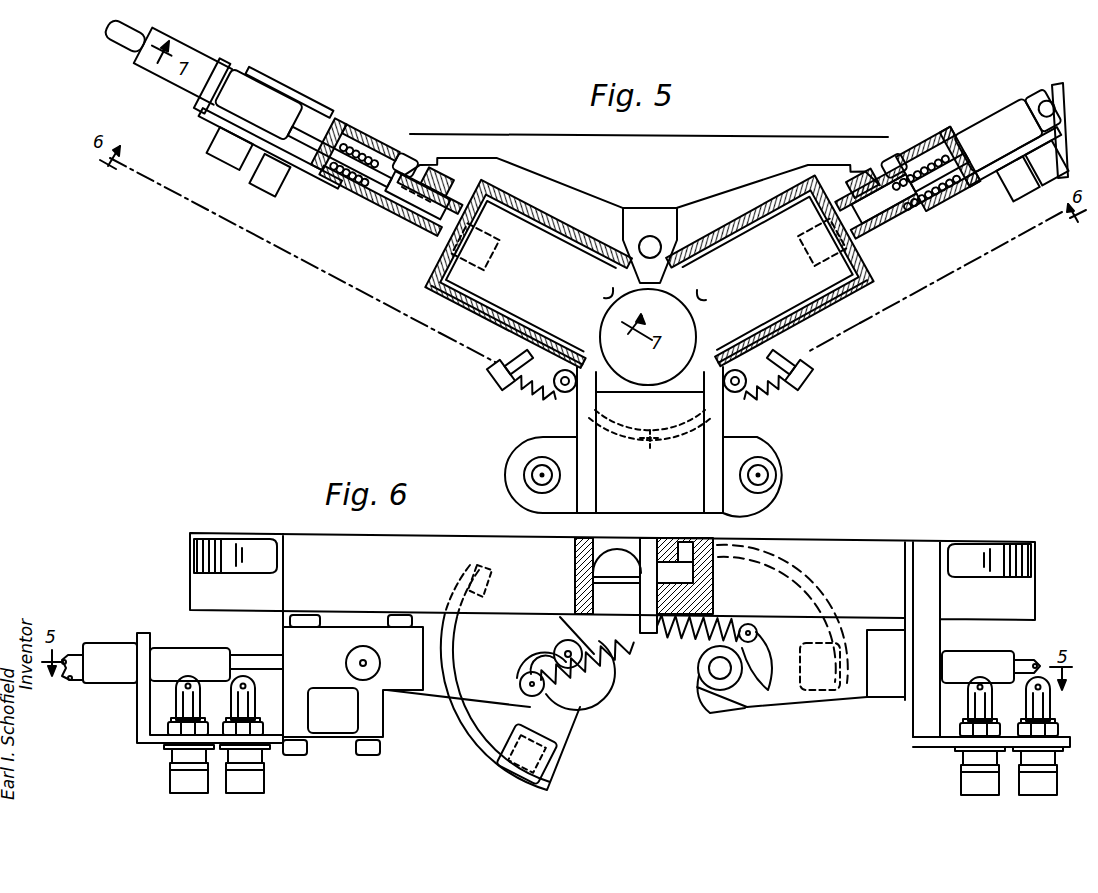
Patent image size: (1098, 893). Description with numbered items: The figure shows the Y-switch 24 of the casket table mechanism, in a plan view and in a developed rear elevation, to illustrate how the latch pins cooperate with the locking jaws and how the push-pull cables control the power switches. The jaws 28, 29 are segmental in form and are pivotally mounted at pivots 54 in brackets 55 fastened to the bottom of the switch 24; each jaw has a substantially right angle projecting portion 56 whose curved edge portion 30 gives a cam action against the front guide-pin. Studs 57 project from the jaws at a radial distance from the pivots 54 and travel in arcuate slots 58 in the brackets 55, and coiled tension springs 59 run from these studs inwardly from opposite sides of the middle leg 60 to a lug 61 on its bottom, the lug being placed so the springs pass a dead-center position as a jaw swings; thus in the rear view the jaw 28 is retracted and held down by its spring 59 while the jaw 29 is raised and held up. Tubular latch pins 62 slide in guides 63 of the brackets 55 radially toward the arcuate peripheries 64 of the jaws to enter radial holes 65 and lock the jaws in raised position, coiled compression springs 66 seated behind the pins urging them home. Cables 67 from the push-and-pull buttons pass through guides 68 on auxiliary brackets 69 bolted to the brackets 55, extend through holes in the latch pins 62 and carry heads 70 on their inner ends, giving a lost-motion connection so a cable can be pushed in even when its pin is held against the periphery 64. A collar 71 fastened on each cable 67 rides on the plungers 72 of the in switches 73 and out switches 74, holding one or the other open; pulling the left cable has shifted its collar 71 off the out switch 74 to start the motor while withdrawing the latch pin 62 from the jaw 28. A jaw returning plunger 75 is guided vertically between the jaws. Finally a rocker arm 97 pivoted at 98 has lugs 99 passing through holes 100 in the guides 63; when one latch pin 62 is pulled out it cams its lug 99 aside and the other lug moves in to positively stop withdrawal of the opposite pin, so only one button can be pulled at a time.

In FIG. 5, the Y-switch 24 is at (723, 453).
In FIG. 6, the Y-switch 24 is at (447, 536).
In FIG. 5, the jaw 28 is at (552, 237).
In FIG. 6, the jaw 28 is at (458, 728).
In FIG. 5, the jaw 29 is at (707, 232).
In FIG. 6, the jaw 29 is at (830, 585).
In FIG. 5, the edge portion 30 is at (653, 300).
In FIG. 6, the pivot 54 is at (577, 660).
In FIG. 5, the bracket 55 is at (478, 332).
In FIG. 6, the bracket 55 is at (440, 700).
In FIG. 5, the projecting portion 56 is at (672, 350).
In FIG. 6, the projecting portion 56 is at (685, 542).
In FIG. 5, the stud 57 is at (507, 383).
In FIG. 6, the stud 57 is at (525, 680).
In FIG. 6, the arcuate slot 58 is at (535, 640).
In FIG. 5, the coiled tension spring 59 is at (550, 405).
In FIG. 6, the coiled tension spring 59 is at (620, 640).
In FIG. 5, the middle leg 60 is at (720, 503).
In FIG. 6, the middle leg 60 is at (575, 537).
In FIG. 5, the lug 61 is at (665, 437).
In FIG. 6, the lug 61 is at (627, 623).
In FIG. 5, the tubular latch pin 62 is at (412, 237).
In FIG. 5, the guide 63 is at (448, 196).
In FIG. 6, the guide 63 is at (332, 682).
In FIG. 5, the arcuate periphery 64 is at (482, 285).
In FIG. 6, the arcuate periphery 64 is at (797, 563).
In FIG. 5, the radial hole 65 is at (494, 232).
In FIG. 6, the radial hole 65 is at (555, 765).
In FIG. 5, the coiled compression spring 66 is at (372, 155).
In FIG. 5, the cable 67 is at (322, 140).
In FIG. 6, the cable 67 is at (70, 657).
In FIG. 5, the guide 68 is at (217, 54).
In FIG. 6, the guide 68 is at (113, 645).
In FIG. 5, the auxiliary bracket 69 is at (207, 110).
In FIG. 6, the auxiliary bracket 69 is at (140, 703).
In FIG. 5, the head 70 is at (384, 222).
In FIG. 5, the collar 71 is at (277, 83).
In FIG. 6, the collar 71 is at (185, 652).
In FIG. 6, the plunger 72 is at (178, 684).
In FIG. 5, the in switch 73 is at (216, 170).
In FIG. 6, the in switch 73 is at (170, 780).
In FIG. 5, the out switch 74 is at (275, 202).
In FIG. 6, the out switch 74 is at (267, 780).
In FIG. 5, the jaw returning plunger 75 is at (650, 403).
In FIG. 6, the jaw returning plunger 75 is at (645, 537).
In FIG. 5, the rocker arm 97 is at (797, 137).
In FIG. 5, the pivot 98 is at (655, 256).
In FIG. 5, the lug 99 is at (414, 163).
In FIG. 5, the hole 100 is at (385, 150).